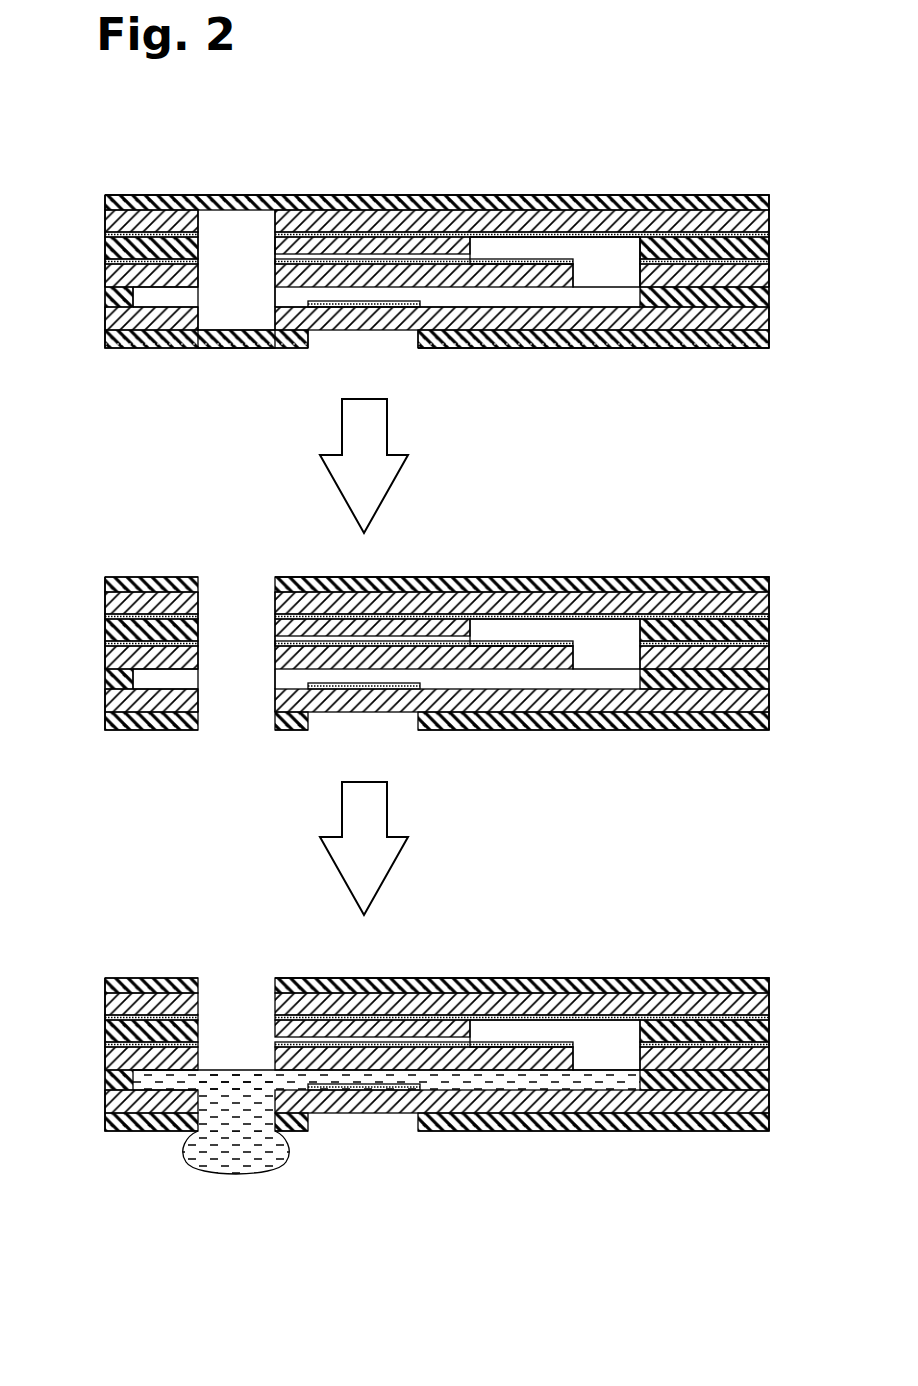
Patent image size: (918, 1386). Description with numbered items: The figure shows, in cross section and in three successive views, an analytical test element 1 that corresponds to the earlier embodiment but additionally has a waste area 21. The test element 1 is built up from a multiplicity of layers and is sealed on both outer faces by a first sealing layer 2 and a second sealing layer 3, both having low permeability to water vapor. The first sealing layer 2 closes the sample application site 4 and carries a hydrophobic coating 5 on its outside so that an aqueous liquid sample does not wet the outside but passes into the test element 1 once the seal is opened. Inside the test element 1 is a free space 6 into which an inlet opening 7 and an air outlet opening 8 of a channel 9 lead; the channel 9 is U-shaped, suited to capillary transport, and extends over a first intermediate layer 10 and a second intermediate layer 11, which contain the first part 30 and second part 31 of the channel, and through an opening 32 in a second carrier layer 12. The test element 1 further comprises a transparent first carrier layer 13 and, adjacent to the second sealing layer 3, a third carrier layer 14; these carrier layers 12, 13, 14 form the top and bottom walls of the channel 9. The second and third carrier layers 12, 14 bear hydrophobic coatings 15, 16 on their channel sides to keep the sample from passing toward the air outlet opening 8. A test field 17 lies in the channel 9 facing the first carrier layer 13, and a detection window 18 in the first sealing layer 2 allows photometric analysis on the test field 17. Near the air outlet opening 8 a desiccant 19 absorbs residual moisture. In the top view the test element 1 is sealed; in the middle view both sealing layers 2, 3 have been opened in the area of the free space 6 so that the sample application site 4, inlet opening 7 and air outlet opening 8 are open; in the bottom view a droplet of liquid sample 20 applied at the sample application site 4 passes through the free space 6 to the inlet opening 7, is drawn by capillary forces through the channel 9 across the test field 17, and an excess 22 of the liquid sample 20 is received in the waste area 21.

The test element 1 is at (773, 131).
The first sealing layer 2 is at (105, 346).
The second sealing layer 3 is at (105, 200).
The sample application site 4 is at (220, 376).
The hydrophobic coating 5 is at (769, 349).
The free space 6 is at (212, 320).
The inlet opening 7 is at (284, 296).
The air outlet opening 8 is at (271, 258).
The channel 9 is at (588, 252).
The first intermediate layer 10 is at (105, 316).
The second intermediate layer 11 is at (105, 235).
The second carrier layer 12 is at (105, 264).
The first carrier layer 13 is at (105, 340).
The third carrier layer 14 is at (105, 204).
The hydrophobic coating 15 is at (105, 251).
The hydrophobic coating 16 is at (105, 222).
The test field 17 is at (380, 308).
The detection window 18 is at (337, 338).
The desiccant 19 is at (275, 247).
The liquid sample 20 is at (236, 1160).
The waste area 21 is at (150, 298).
The excess of liquid sample 22 is at (150, 1080).
The first part of the channel 30 is at (555, 300).
The second part of the channel 31 is at (500, 248).
The opening 32 is at (612, 275).